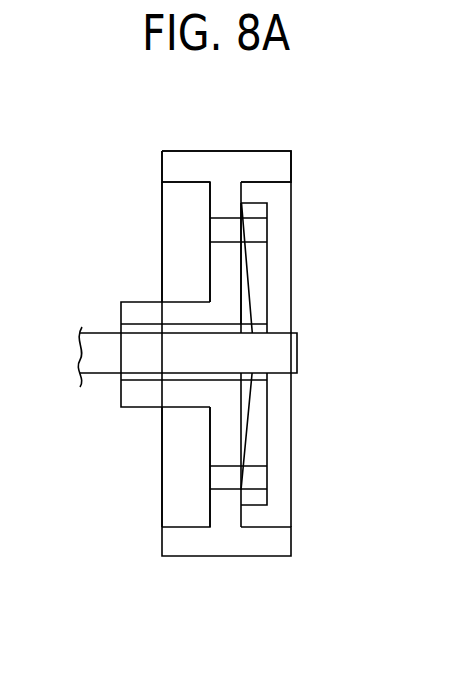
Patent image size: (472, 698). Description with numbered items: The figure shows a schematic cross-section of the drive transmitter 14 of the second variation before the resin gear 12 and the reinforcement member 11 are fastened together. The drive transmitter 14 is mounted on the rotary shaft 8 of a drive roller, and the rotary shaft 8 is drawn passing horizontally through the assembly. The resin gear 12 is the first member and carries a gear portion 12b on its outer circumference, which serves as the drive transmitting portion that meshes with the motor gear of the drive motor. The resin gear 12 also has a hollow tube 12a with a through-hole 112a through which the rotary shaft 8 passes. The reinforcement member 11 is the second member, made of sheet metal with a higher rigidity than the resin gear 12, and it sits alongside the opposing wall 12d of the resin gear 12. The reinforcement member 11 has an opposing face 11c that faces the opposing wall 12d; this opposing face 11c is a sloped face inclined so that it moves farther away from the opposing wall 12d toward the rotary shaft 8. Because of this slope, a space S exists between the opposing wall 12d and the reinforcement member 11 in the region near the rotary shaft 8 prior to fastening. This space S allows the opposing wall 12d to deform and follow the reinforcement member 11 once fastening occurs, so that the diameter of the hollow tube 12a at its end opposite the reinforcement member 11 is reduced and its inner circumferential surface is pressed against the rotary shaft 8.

The drive transmitter 14 is at (317, 128).
The resin gear 12 is at (137, 220).
The gear portion 12b is at (253, 151).
The opposing wall 12d is at (210, 201).
The hollow tube 12a is at (131, 302).
The bore of boss portion 112a is at (141, 327).
The rotary shaft 8 is at (298, 363).
The reinforcement member 11 is at (267, 257).
The opposing face 11c is at (245, 270).
The space S is at (242, 307).